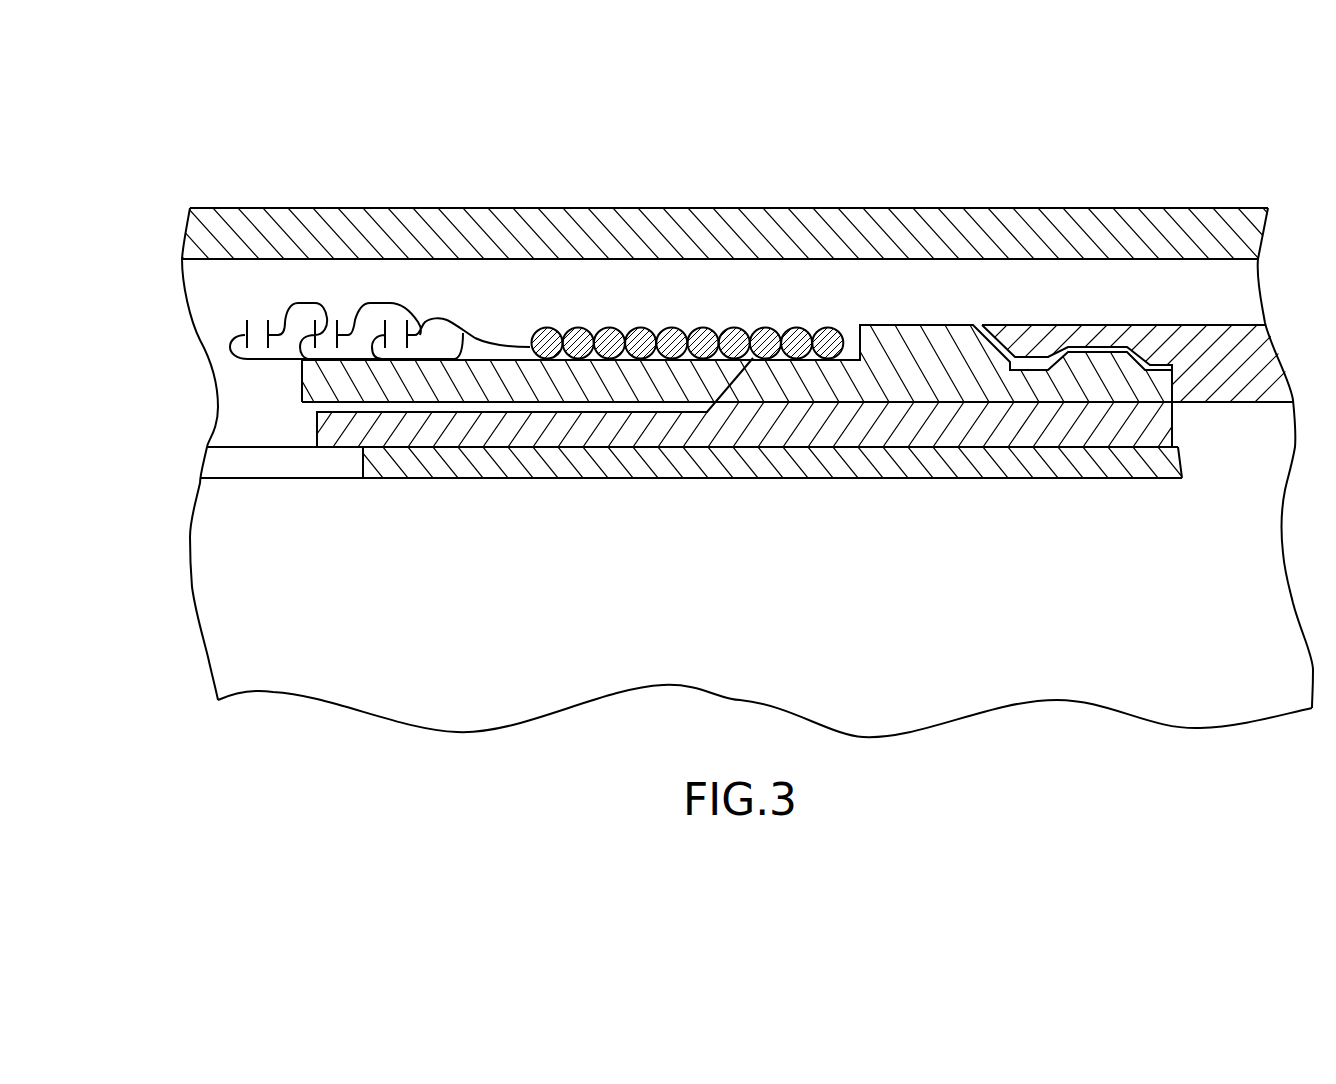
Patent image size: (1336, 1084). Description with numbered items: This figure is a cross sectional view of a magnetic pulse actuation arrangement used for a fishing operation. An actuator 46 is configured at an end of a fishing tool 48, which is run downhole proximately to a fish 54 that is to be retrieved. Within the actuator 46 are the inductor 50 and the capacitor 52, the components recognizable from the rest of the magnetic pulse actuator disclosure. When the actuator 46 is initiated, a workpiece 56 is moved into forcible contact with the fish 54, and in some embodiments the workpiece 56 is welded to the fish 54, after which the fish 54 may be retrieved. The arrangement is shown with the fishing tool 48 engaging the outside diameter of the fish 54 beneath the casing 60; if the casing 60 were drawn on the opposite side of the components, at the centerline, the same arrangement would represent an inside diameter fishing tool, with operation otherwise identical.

The actuator 46 is at (966, 158).
The fishing tool 48 is at (353, 427).
The inductor 50 is at (702, 333).
The capacitor 52 is at (321, 312).
The fish 54 is at (492, 462).
The workpiece 56 is at (538, 375).
The casing 60 is at (783, 232).